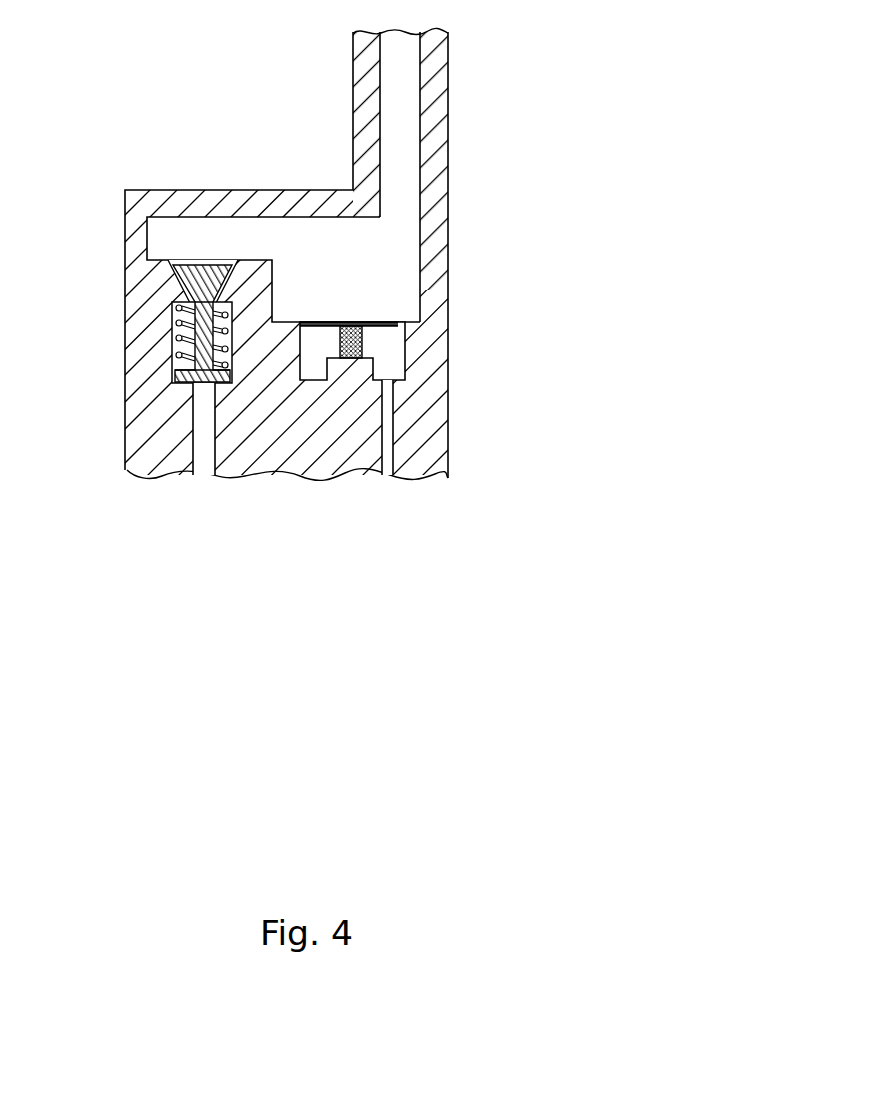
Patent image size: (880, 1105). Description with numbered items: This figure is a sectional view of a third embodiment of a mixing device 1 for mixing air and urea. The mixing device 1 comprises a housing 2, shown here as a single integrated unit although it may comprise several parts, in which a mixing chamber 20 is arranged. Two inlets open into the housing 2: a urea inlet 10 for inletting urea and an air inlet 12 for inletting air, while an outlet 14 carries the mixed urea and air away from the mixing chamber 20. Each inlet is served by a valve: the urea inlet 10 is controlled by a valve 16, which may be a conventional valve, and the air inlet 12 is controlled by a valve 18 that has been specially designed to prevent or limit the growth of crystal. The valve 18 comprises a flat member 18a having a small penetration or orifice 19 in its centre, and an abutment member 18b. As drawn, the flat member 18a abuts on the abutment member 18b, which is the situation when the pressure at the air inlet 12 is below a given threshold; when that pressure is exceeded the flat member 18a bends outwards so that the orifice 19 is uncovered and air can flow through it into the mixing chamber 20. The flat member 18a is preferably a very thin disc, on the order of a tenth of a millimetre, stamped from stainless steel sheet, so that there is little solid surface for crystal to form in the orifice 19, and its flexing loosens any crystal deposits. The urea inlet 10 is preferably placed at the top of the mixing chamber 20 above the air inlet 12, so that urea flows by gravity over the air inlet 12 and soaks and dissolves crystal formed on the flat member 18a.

The mixing device 1 is at (110, 235).
The housing 2 is at (130, 465).
The urea inlet 10 is at (205, 468).
The air inlet 12 is at (387, 472).
The outlet 14 is at (402, 65).
The urea valve 16 is at (177, 270).
The air valve 18 is at (388, 349).
The flat member 18a is at (397, 318).
The abutment member 18b is at (363, 335).
The orifice 19 is at (350, 322).
The mixing chamber 20 is at (387, 247).